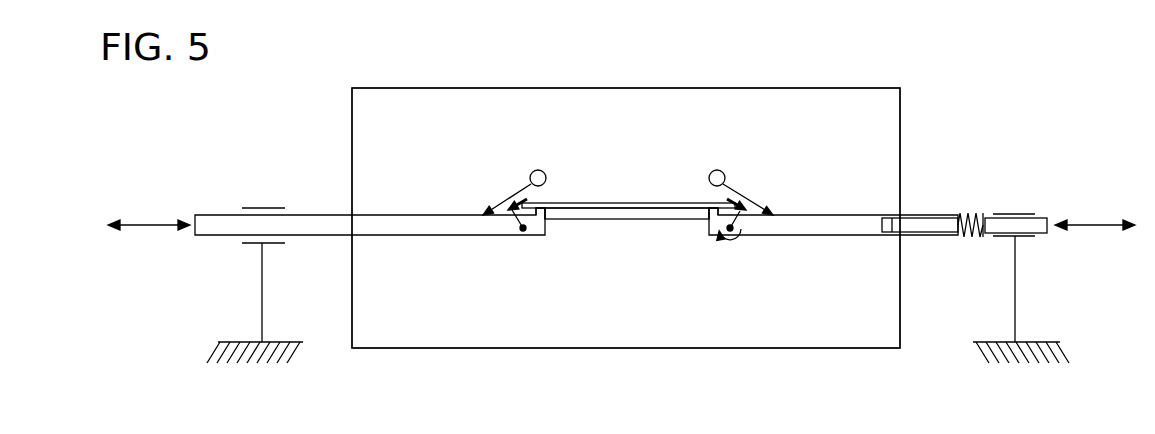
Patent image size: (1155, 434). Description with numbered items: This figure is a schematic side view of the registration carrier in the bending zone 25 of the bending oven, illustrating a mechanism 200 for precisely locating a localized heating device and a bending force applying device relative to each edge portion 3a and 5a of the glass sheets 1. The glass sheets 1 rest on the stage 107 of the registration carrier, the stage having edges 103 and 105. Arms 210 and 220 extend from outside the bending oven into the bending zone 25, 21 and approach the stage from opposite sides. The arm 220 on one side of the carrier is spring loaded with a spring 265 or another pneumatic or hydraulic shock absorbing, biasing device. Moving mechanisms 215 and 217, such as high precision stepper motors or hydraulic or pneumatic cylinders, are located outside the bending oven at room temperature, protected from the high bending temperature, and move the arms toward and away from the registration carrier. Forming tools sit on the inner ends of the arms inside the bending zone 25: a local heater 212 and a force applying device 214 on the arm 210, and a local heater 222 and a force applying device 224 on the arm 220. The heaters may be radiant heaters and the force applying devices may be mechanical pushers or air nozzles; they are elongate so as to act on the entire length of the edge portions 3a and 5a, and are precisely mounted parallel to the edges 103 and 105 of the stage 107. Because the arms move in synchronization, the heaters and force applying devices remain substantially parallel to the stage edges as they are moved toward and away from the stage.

The glass sheets 1 is at (598, 193).
The edge portion 3a is at (526, 232).
The edge portion 5a is at (732, 202).
The bending zone 25 is at (838, 88).
The chamber 21 is at (838, 88).
The edge of the stage 103 is at (540, 214).
The edge of the stage 105 is at (707, 212).
The stage 107 is at (640, 221).
The mechanism 200 is at (224, 159).
The arm 210 is at (307, 226).
The local heater 212 is at (512, 168).
The force applying device 214 is at (505, 226).
The moving mechanism 215 is at (212, 356).
The moving mechanism 217 is at (1060, 347).
The arm 220 is at (927, 200).
The local heater 222 is at (725, 150).
The force applying device 224 is at (742, 222).
The spring 265 is at (968, 238).